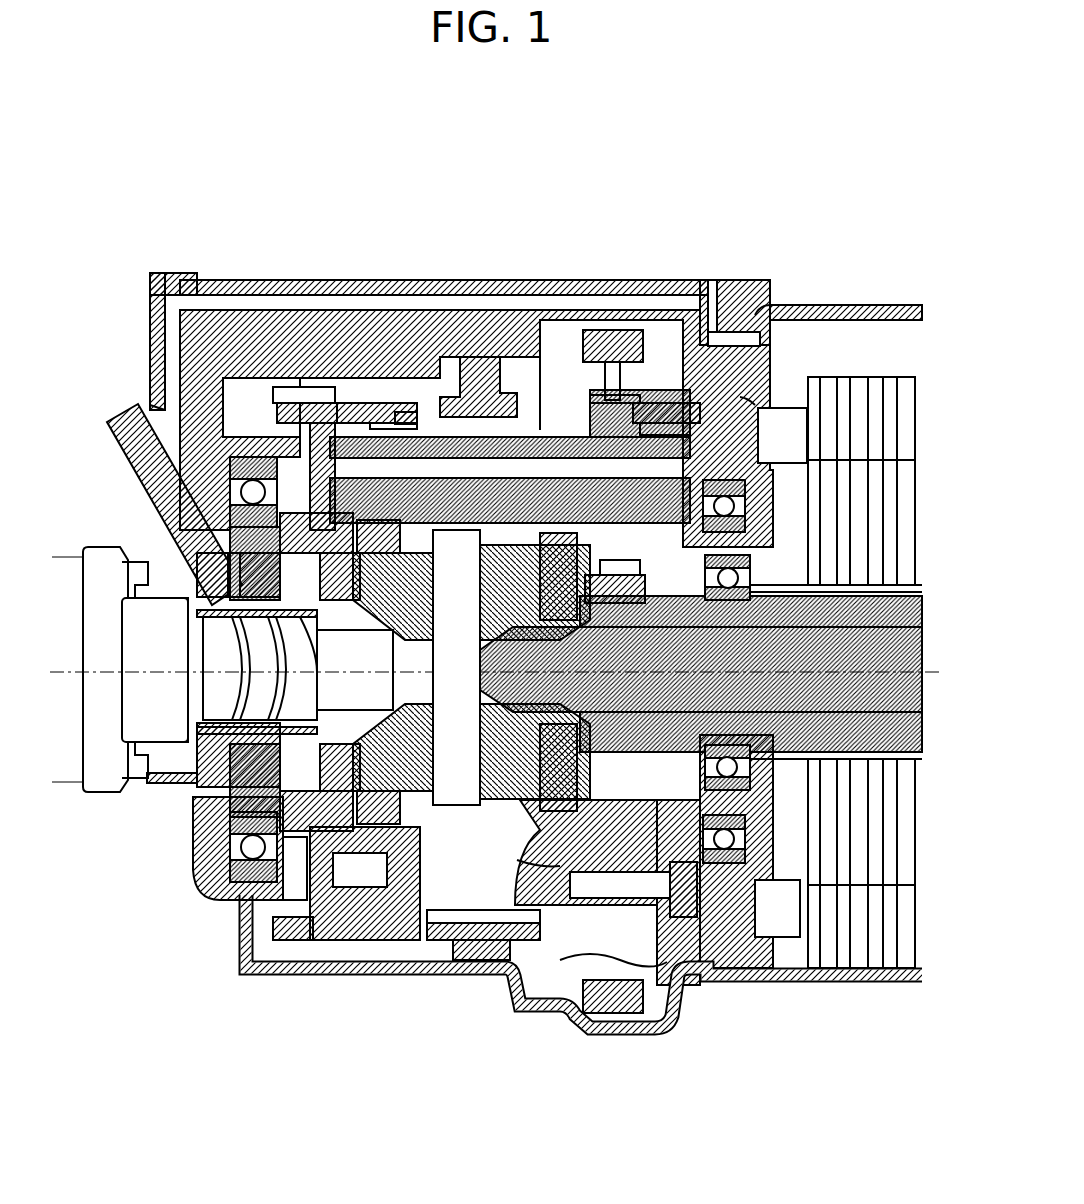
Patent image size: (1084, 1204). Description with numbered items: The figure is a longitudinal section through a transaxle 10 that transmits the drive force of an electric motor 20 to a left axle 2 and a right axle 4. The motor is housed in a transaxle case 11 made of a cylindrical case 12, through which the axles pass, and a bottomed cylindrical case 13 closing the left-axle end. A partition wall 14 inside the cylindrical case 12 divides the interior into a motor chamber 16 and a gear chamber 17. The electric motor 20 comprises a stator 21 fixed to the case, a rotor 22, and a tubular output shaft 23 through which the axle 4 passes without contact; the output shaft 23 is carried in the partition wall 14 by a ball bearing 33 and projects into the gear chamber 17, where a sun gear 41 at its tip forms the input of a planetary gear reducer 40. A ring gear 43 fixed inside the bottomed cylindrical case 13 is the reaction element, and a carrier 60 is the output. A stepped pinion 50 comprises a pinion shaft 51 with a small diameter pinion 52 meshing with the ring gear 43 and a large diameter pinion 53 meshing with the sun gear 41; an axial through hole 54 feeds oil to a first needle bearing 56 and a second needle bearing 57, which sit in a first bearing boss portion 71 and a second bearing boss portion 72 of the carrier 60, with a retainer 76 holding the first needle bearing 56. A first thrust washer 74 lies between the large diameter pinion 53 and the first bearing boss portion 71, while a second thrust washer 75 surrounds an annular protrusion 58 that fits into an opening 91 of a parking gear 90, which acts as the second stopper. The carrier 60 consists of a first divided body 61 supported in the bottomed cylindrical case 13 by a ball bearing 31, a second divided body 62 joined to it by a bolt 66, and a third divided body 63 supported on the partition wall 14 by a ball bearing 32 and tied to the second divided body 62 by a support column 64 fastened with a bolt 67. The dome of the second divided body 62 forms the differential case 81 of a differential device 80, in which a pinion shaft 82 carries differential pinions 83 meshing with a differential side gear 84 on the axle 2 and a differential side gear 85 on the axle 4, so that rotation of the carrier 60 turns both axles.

The left axle 2 is at (88, 800).
The right axle 4 is at (905, 757).
The transaxle 10 is at (268, 252).
The transaxle case 11 is at (740, 273).
The cylindrical case 12 is at (800, 306).
The bottomed cylindrical case 13 is at (150, 303).
The partition wall 14 is at (760, 890).
The motor chamber 16 is at (783, 364).
The gear chamber 17 is at (572, 393).
The electric motor 20 is at (838, 358).
The stator 21 is at (860, 387).
The rotor 22 is at (915, 458).
The output shaft 23 is at (883, 590).
The ball bearing 31 is at (160, 387).
The ball bearing 32 is at (755, 807).
The ball bearing 33 is at (753, 570).
The planetary gear reducer 40 is at (250, 397).
The sun gear 41 is at (657, 603).
The ring gear 43 is at (458, 437).
The stepped pinion 50 is at (560, 393).
The pinion shaft 51 is at (742, 398).
The small diameter pinion 52 is at (485, 357).
The large diameter pinion 53 is at (598, 345).
The through hole 54 is at (754, 501).
The first needle bearing 56 is at (653, 397).
The second needle bearing 57 is at (398, 410).
The annular protrusion 58 is at (310, 450).
The carrier 60 is at (260, 575).
The first divided body 61 is at (193, 820).
The second divided body 62 is at (393, 937).
The third divided body 63 is at (690, 960).
The support column 64 is at (653, 887).
The bolt 66 is at (290, 890).
The bolt 67 is at (745, 890).
The first bearing boss portion 71 is at (690, 385).
The second bearing boss portion 72 is at (412, 400).
The first thrust washer 74 is at (607, 347).
The second thrust washer 75 is at (345, 400).
The retainer 76 is at (693, 433).
The differential device 80 is at (580, 768).
The differential case 81 is at (573, 800).
The pinion shaft 82 is at (440, 820).
The differential pinions 83 is at (483, 830).
The differential side gear 84 is at (210, 885).
The differential side gear 85 is at (580, 867).
The parking gear 90 is at (312, 395).
The opening 91 is at (275, 478).